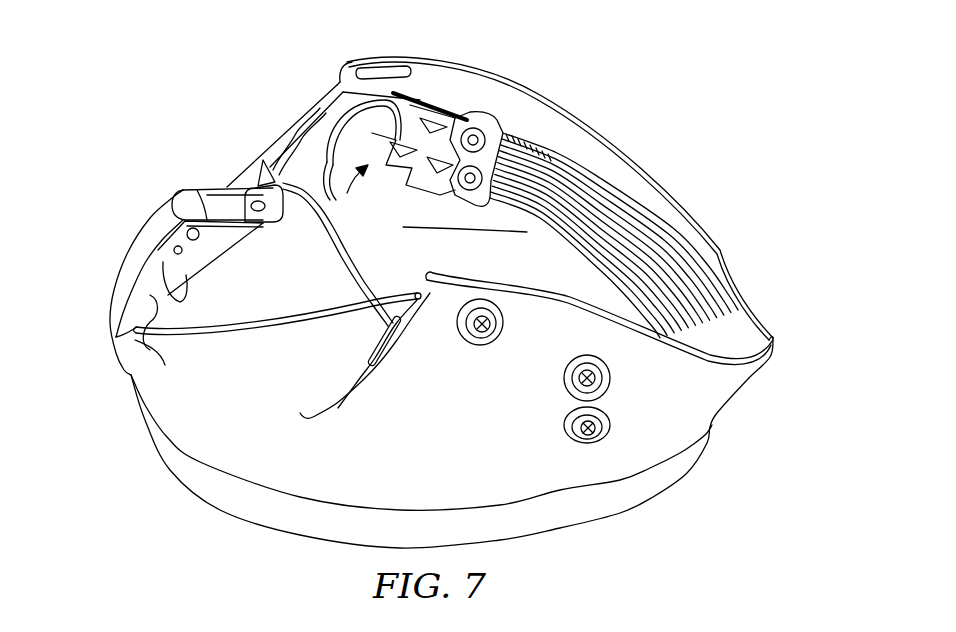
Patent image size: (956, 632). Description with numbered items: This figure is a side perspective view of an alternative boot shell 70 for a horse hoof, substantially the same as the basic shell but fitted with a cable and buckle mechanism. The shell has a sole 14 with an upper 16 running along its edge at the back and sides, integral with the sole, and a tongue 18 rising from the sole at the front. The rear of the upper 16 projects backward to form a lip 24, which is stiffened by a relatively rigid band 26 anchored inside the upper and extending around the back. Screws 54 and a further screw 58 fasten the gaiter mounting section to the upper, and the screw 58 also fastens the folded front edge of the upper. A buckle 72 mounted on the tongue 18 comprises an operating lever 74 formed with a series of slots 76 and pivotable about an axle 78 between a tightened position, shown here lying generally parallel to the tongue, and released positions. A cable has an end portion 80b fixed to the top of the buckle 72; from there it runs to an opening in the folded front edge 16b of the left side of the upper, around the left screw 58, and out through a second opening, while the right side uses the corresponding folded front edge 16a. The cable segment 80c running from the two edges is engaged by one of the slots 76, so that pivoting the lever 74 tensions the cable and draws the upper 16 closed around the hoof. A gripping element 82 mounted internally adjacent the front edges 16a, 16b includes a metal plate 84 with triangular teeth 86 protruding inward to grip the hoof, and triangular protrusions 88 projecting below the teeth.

The sole 14 is at (197, 477).
The upper 16 is at (735, 416).
The folded front edge of the right side of the upper 16a is at (342, 83).
The folded front edge of the left side of the upper 16b is at (363, 368).
The tongue 18 is at (452, 248).
The lip 24 is at (770, 332).
The band 26 is at (712, 310).
The screws 54 is at (485, 122).
The screw 58 is at (484, 345).
The boot shell 70 is at (655, 52).
The buckle 72 is at (192, 175).
The operating lever 74 is at (123, 267).
The slots 76 is at (112, 292).
The axle 78 is at (199, 239).
The cable end portion 80b is at (340, 253).
The cable segment 80c is at (230, 333).
The gripping element 82 is at (333, 233).
The metal plate 84 is at (460, 108).
The triangular teeth 86 is at (433, 118).
The triangular protrusions 88 is at (380, 205).